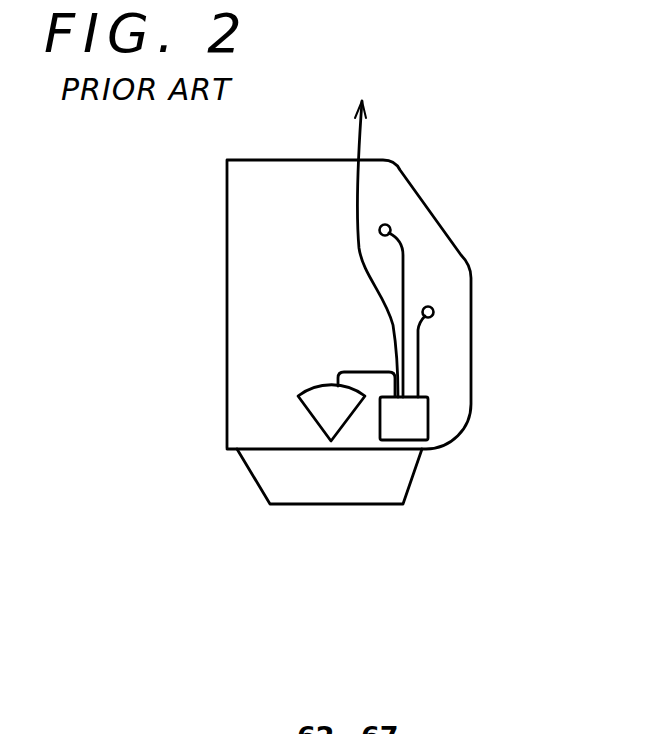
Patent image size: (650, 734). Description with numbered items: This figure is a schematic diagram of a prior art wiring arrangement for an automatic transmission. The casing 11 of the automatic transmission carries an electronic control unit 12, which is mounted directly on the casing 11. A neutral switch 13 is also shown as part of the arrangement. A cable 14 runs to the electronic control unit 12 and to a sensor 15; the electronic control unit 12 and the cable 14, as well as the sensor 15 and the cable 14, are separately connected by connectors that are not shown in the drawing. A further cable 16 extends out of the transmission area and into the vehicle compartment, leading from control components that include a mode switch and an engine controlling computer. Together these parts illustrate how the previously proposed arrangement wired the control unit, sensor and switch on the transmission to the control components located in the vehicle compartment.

The casing 11 is at (241, 322).
The electronic control unit 12 is at (428, 415).
The neutral switch 13 is at (318, 412).
The cable 14 is at (420, 350).
The sensor 15 is at (433, 310).
The cable 16 is at (358, 142).